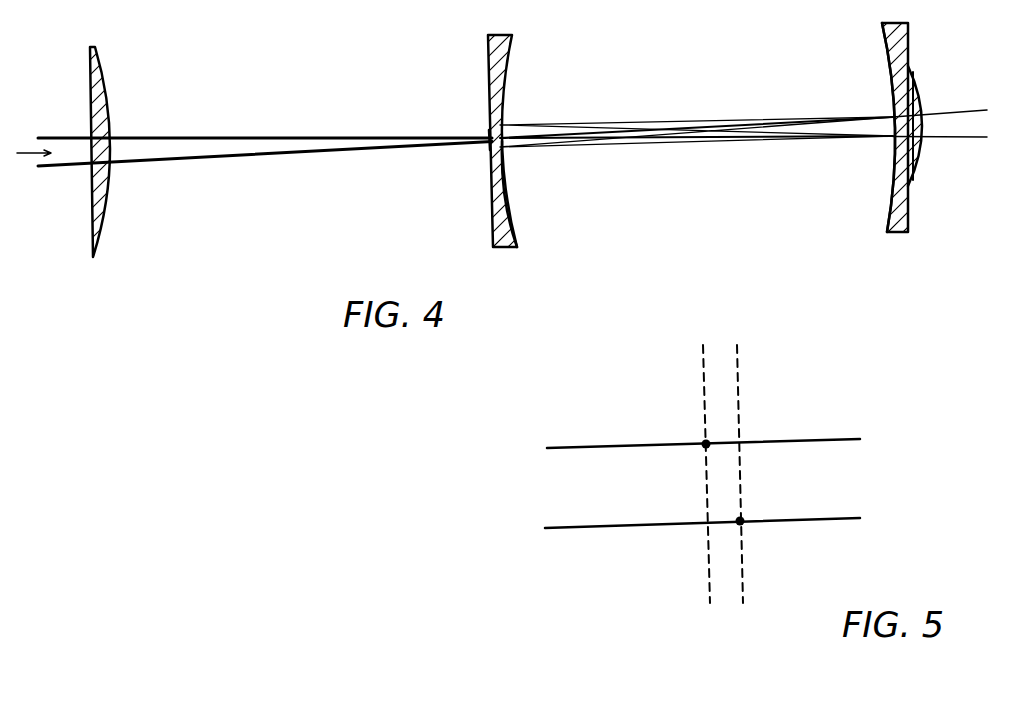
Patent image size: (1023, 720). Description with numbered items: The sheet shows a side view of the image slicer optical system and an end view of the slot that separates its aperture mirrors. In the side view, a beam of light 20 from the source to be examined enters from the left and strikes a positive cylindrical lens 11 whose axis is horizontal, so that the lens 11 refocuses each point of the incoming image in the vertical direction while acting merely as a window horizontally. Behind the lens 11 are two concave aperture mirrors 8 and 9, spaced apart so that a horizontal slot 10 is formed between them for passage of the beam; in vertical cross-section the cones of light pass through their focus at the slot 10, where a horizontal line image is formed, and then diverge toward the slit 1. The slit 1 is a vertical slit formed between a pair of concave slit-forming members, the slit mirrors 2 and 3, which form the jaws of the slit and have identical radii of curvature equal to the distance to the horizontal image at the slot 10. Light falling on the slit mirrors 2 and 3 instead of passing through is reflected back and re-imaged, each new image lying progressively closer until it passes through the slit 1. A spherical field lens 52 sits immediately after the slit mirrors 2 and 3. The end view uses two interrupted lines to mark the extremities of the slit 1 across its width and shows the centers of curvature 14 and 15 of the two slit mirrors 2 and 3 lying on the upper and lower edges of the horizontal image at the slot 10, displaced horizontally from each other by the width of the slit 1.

In FIG. 5, the slit 1 is at (703, 358).
In FIG. 4, the slit mirror 2 is at (888, 212).
In FIG. 4, the slit mirror 3 is at (886, 55).
In FIG. 4, the aperture mirror 8 is at (508, 70).
In FIG. 4, the aperture mirror 9 is at (510, 197).
In FIG. 4, the slot 10 is at (489, 150).
In FIG. 5, the slot 10 is at (858, 518).
In FIG. 4, the cylindrical lens 11 is at (110, 87).
In FIG. 5, the center of curvature 14 is at (702, 442).
In FIG. 5, the center of curvature 15 is at (745, 524).
In FIG. 4, the beam of light 20 is at (237, 147).
In FIG. 4, the spherical lens 52 is at (921, 93).